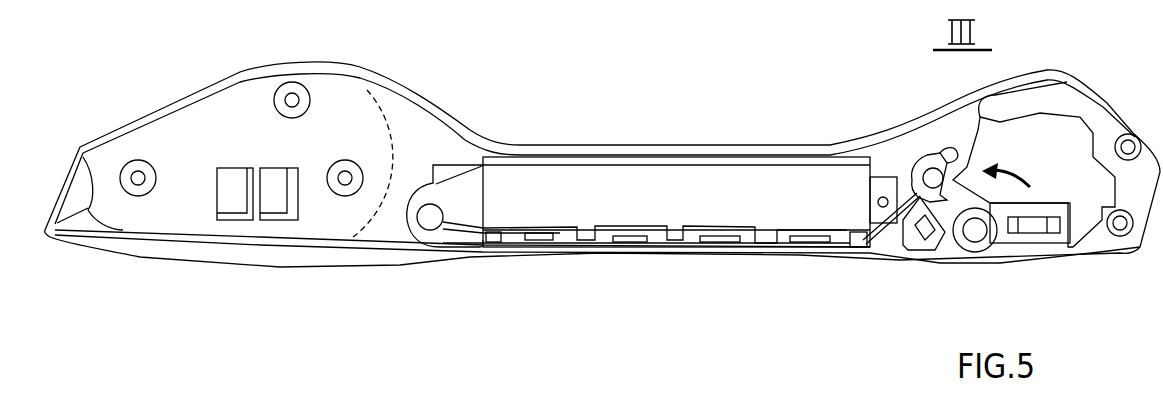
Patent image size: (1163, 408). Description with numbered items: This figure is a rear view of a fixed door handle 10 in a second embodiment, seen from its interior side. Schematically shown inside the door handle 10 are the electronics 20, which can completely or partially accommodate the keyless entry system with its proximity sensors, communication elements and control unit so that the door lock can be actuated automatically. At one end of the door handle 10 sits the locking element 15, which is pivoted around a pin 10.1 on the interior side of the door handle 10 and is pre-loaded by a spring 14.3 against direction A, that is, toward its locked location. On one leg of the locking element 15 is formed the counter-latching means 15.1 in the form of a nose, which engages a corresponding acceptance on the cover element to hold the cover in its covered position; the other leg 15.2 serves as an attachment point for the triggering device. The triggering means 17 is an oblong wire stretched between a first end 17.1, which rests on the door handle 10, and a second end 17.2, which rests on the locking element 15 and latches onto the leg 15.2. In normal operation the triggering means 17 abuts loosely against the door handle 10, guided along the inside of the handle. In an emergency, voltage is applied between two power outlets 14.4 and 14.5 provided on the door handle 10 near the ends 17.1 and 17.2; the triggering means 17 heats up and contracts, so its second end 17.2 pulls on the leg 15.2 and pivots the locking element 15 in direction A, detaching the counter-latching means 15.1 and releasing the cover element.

The door handle 10 is at (182, 208).
The pin 10.1 is at (975, 232).
The spring 14.3 is at (950, 240).
The power outlet 14.4 is at (495, 240).
The power outlet 14.5 is at (857, 240).
The locking element 15 is at (1013, 243).
The counter-latching means 15.1 is at (1040, 225).
The leg 15.2 is at (943, 150).
The triggering means 17 is at (747, 240).
The first end 17.1 is at (430, 218).
The second end 17.2 is at (930, 180).
The electronics 20 is at (680, 190).